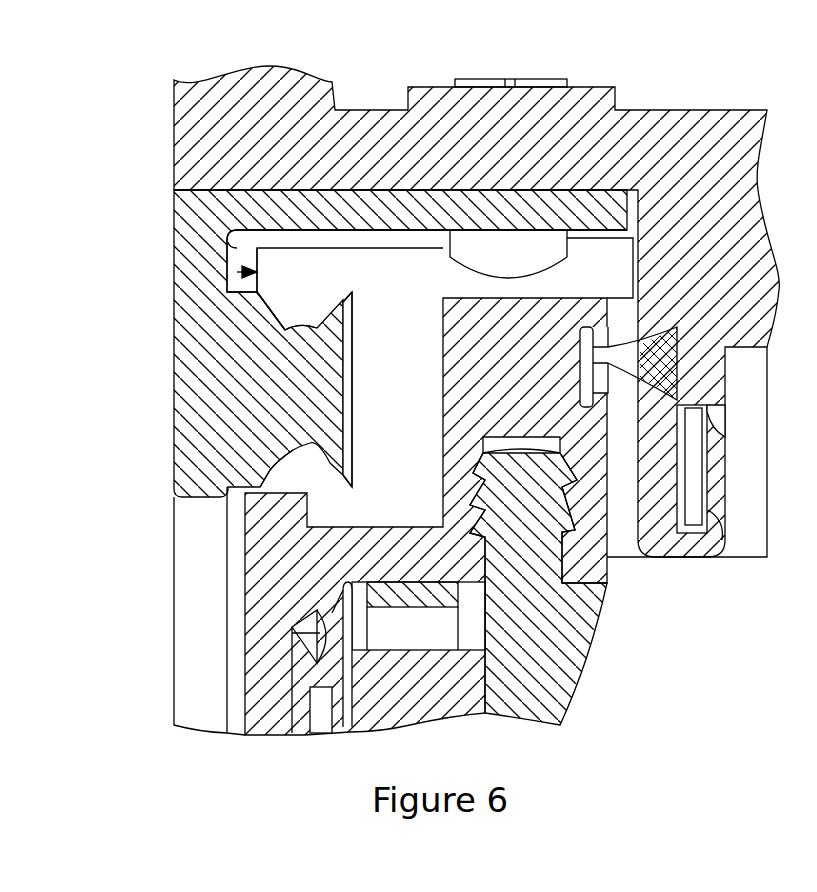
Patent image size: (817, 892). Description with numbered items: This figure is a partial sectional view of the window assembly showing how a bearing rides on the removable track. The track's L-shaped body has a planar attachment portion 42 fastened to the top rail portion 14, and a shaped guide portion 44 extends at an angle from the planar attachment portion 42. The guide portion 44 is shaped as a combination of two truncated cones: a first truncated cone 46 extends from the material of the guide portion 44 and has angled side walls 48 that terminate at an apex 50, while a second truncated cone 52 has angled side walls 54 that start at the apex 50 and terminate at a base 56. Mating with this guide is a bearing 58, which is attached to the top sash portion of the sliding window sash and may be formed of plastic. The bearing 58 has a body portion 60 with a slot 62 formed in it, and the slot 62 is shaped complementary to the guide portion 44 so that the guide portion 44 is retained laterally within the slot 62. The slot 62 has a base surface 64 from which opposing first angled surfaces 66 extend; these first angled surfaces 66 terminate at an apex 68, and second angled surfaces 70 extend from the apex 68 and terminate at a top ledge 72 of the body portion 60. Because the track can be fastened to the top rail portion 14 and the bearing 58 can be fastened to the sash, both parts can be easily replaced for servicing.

The top rail portion 14 is at (620, 142).
The planar attachment portion 42 is at (352, 207).
The shaped guide portion 44 is at (187, 403).
The first truncated cone 46 is at (242, 408).
The angled side walls 48 is at (277, 307).
The apex 50 is at (371, 389).
The second truncated cone 52 is at (318, 330).
The angled side walls 54 is at (340, 297).
The base 56 is at (347, 427).
The bearing 58 is at (353, 340).
The body portion 60 is at (353, 377).
The slot 62 is at (401, 341).
The base surface 64 is at (401, 417).
The first angled surfaces 66 is at (332, 240).
The apex 68 is at (313, 325).
The second angled surfaces 70 is at (275, 310).
The top ledge 72 is at (237, 270).